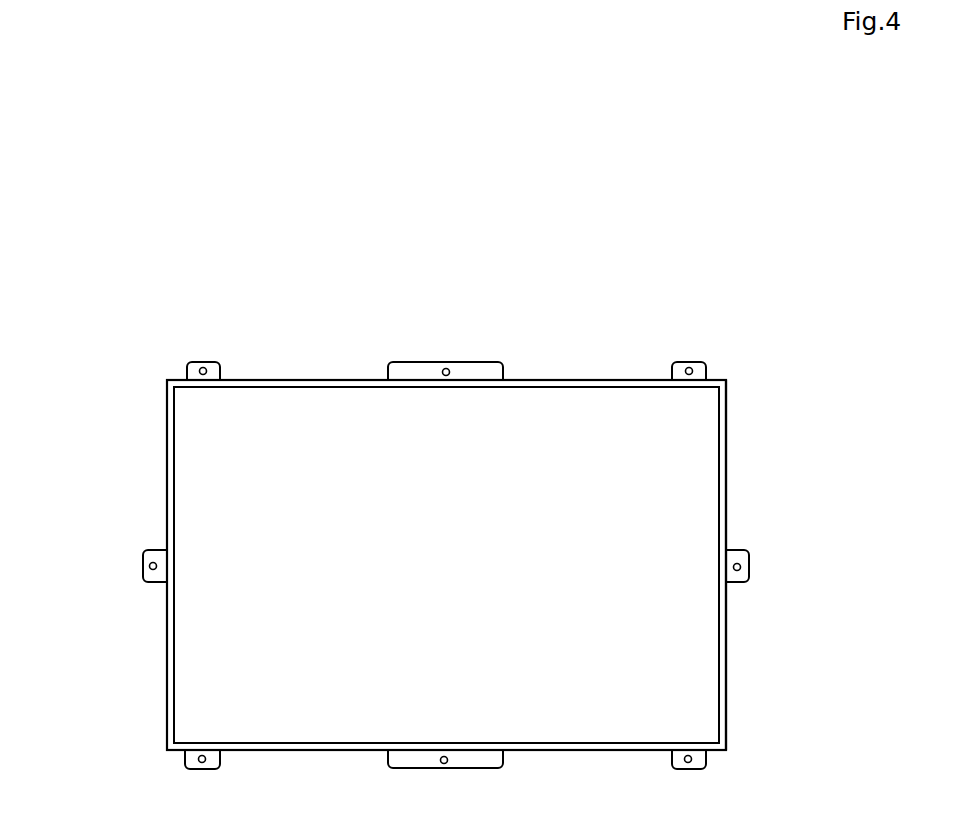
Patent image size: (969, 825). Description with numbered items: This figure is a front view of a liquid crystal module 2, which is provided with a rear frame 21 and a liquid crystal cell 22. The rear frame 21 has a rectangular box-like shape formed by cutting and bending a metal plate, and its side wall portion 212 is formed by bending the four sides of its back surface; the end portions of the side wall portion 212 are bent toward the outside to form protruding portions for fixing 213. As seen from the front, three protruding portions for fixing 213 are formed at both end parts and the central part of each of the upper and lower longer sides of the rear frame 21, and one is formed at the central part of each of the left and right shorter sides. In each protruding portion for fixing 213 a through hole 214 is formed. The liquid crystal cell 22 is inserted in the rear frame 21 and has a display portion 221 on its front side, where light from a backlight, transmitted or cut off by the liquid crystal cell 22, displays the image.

The liquid crystal module 2 is at (185, 406).
The rear frame 21 is at (167, 433).
The liquid crystal cell 22 is at (262, 485).
The display portion 221 is at (232, 625).
The side wall portion 212 is at (726, 686).
The protruding portion for fixing 213 is at (222, 372).
The through hole 214 is at (203, 368).